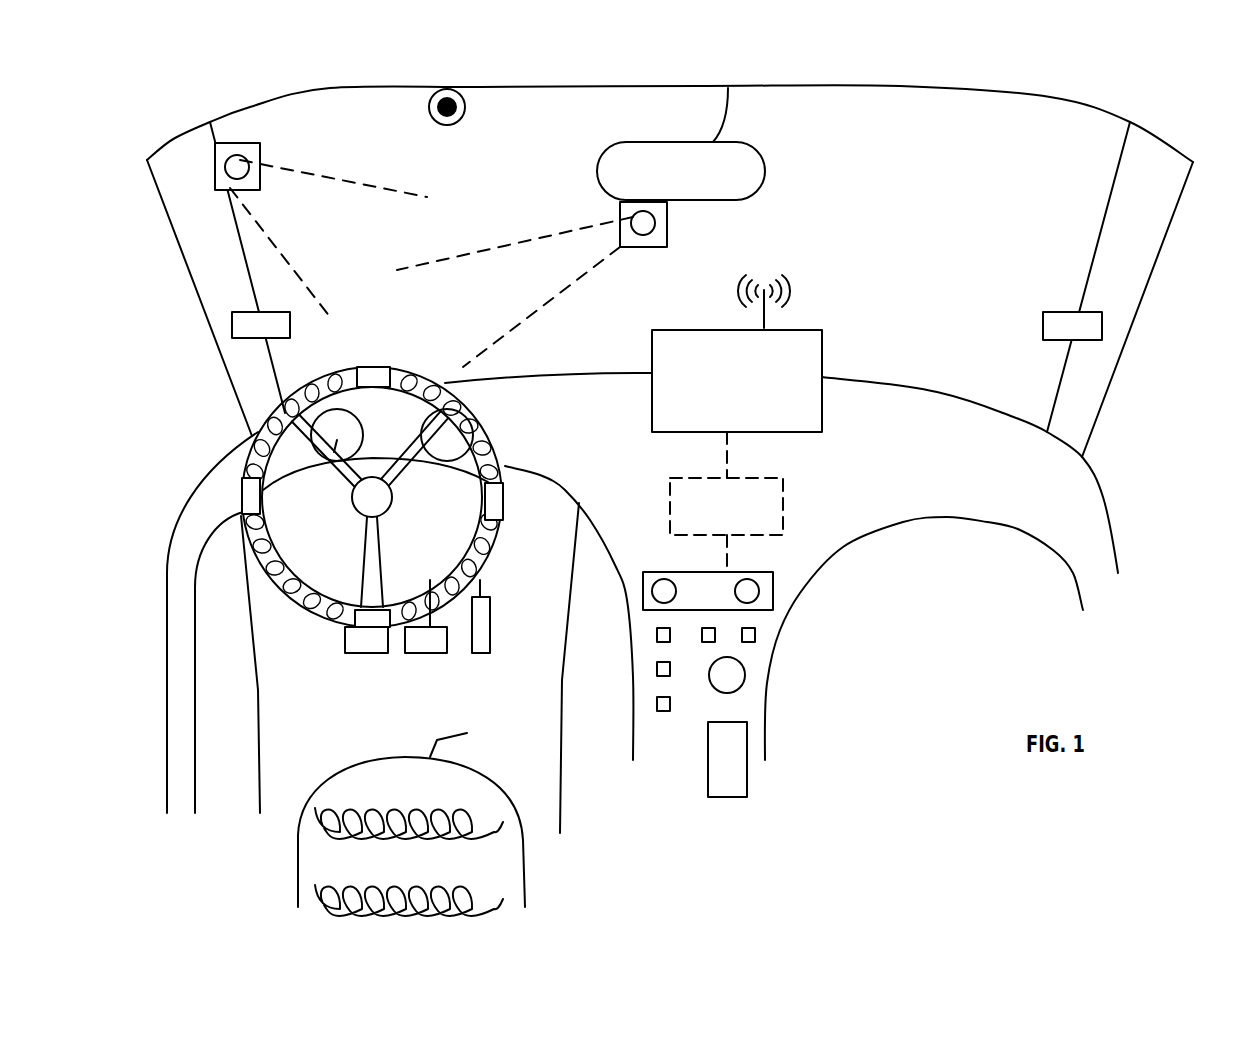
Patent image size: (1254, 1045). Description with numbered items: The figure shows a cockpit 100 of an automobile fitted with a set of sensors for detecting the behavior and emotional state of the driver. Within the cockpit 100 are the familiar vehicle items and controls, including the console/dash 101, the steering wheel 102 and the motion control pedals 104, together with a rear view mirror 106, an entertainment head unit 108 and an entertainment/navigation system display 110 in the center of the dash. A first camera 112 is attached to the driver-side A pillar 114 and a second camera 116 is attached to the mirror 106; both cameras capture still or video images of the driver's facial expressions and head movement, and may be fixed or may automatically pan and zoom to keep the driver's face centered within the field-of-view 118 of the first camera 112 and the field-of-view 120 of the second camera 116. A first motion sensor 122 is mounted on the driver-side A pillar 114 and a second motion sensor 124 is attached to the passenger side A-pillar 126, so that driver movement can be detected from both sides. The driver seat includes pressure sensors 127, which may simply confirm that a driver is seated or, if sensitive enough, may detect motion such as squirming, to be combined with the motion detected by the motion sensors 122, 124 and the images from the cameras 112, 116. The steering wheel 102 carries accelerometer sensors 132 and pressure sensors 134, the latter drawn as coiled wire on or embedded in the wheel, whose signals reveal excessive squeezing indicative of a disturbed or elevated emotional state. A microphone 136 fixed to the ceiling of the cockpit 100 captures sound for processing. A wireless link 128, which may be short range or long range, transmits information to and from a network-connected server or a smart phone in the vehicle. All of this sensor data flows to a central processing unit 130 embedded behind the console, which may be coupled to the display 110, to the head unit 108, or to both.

The cockpit 100 is at (971, 841).
The console/dash 101 is at (625, 632).
The steering wheel 102 is at (508, 440).
The motion control pedals 104 is at (487, 664).
The rear view mirror 106 is at (709, 155).
The entertainment head unit 108 is at (738, 662).
The entertainment/navigation system display 110 is at (765, 414).
The first camera 112 is at (321, 217).
The driver-side A pillar 114 is at (205, 279).
The second camera 116 is at (546, 284).
The field-of-view 118 is at (353, 190).
The field-of-view 120 is at (503, 336).
The first motion sensor 122 is at (288, 335).
The second motion sensor 124 is at (1043, 302).
The passenger side A-pillar 126 is at (1134, 289).
The pressure sensors 127 is at (413, 838).
The wireless link 128 is at (804, 288).
The central processing unit 130 is at (688, 502).
The steering wheel accelerometer sensors 132 is at (368, 376).
The pressure sensors 134 is at (430, 395).
The microphone 136 is at (469, 139).